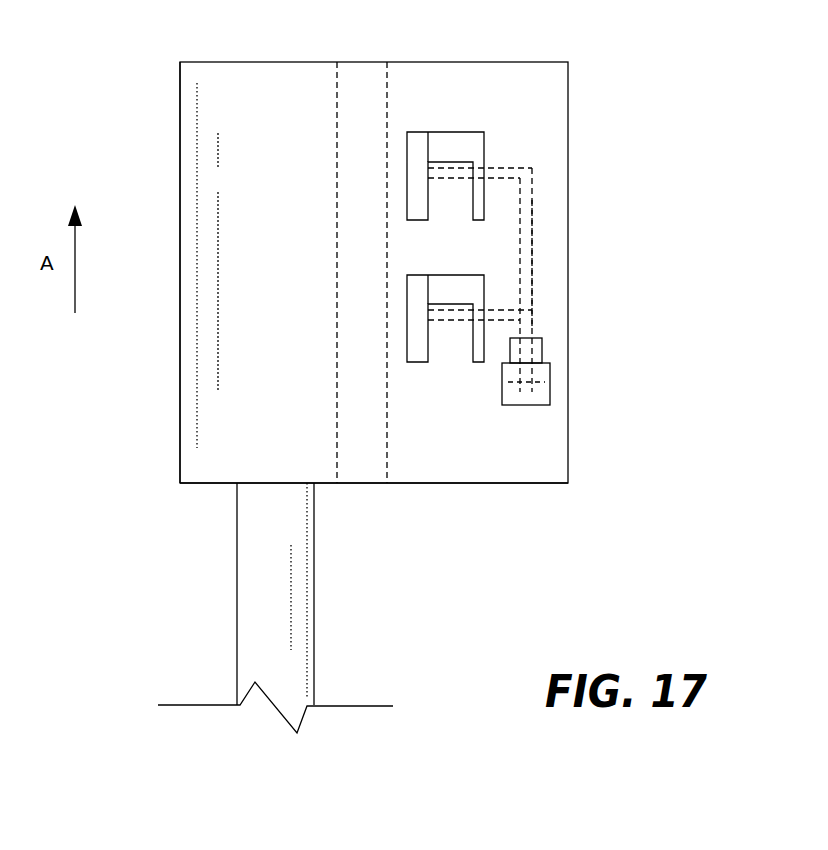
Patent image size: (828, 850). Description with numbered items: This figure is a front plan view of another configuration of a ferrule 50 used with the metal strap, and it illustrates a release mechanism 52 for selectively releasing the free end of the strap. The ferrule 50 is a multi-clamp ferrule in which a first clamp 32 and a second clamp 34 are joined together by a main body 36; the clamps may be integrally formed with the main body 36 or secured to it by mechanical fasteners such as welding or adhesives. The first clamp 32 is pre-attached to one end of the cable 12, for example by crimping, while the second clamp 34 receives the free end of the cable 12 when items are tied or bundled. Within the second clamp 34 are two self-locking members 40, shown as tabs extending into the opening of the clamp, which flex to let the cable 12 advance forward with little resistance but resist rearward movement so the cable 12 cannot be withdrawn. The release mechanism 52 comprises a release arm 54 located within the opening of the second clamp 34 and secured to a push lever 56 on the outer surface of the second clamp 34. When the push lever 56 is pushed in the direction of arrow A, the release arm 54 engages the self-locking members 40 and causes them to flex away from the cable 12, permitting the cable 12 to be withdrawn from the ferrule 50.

The cable 12 is at (213, 570).
The first clamp 32 is at (180, 91).
The second clamp 34 is at (458, 483).
The main body 36 is at (358, 472).
The self-locking members 40 is at (431, 132).
The ferrule 50 is at (156, 371).
The release mechanism 52 is at (549, 302).
The release arm 54 is at (537, 215).
The push lever 56 is at (510, 405).